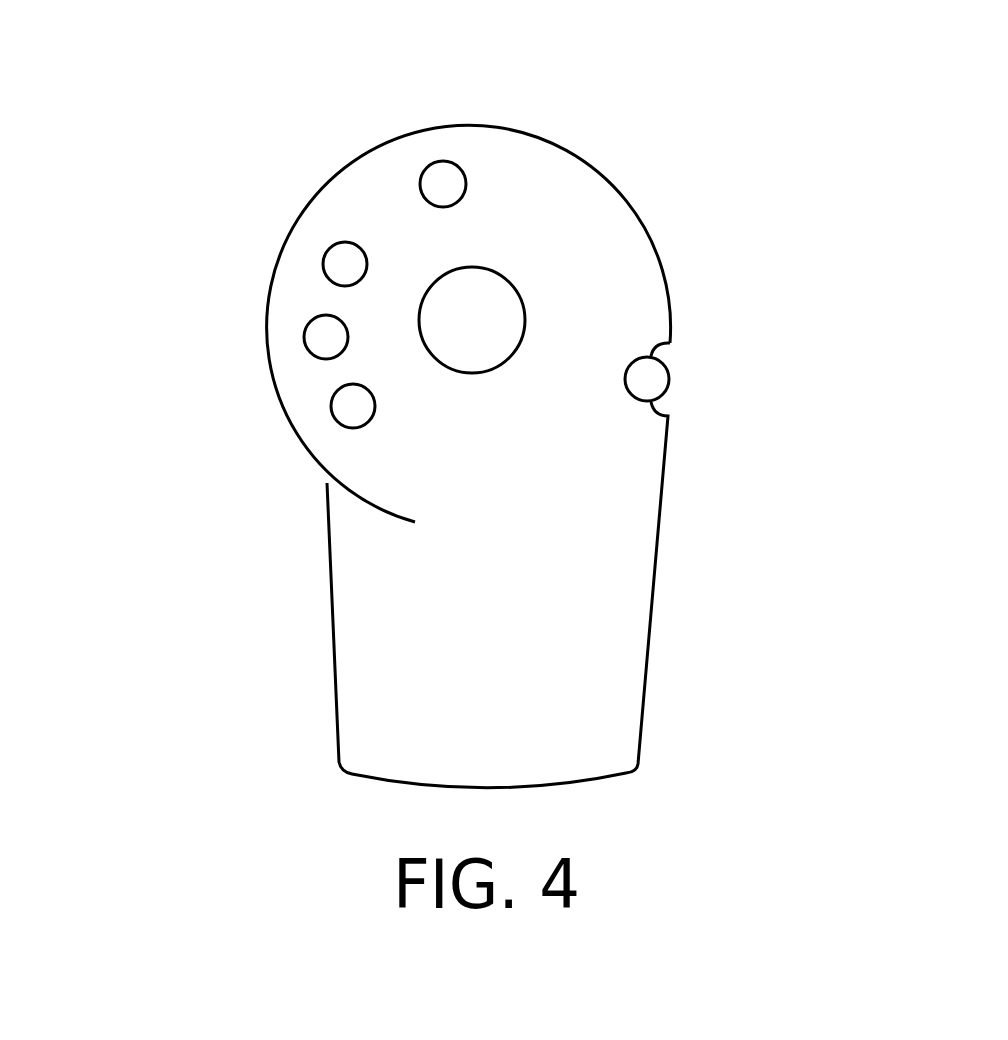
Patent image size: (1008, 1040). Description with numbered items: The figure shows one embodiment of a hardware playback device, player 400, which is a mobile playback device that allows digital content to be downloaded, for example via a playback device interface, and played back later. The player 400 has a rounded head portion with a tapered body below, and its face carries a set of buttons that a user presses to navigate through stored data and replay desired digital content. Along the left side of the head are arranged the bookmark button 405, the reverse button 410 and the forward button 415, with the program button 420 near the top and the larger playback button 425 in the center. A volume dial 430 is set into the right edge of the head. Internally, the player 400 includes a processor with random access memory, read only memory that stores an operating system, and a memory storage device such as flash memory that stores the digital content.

The player 400 is at (572, 757).
The bookmark button 405 is at (331, 407).
The reverse button 410 is at (304, 337).
The forward button 415 is at (323, 263).
The program button 420 is at (437, 162).
The playback button 425 is at (526, 318).
The volume dial 430 is at (670, 378).